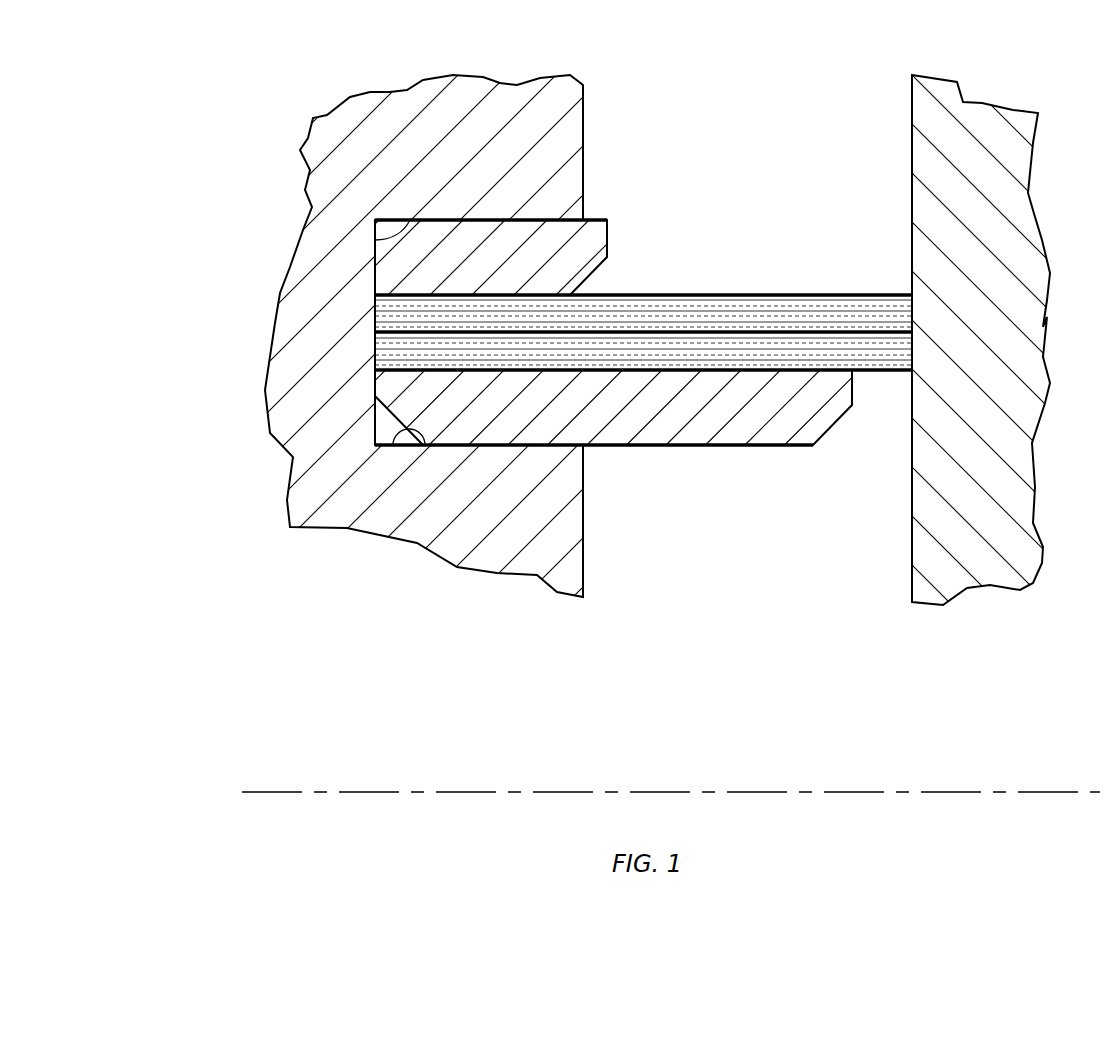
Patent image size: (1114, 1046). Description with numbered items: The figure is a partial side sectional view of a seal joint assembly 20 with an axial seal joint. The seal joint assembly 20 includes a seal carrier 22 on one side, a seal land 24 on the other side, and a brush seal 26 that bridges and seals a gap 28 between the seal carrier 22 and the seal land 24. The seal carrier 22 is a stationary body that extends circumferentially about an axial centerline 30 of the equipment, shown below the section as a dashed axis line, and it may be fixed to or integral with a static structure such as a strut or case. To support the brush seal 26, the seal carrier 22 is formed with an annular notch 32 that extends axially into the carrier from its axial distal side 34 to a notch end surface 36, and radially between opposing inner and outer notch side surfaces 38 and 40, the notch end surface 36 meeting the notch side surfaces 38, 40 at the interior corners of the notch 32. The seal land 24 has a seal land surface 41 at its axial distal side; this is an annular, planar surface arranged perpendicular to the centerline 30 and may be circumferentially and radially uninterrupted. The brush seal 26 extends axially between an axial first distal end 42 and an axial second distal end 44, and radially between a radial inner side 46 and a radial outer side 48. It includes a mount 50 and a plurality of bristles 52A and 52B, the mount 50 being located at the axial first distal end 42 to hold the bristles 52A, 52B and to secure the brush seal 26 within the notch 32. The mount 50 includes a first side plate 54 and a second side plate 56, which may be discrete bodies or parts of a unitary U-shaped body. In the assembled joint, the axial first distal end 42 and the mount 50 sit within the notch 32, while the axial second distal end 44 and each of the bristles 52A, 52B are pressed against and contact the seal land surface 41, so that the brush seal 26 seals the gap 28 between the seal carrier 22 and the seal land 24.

The seal joint assembly 20 is at (197, 107).
The seal carrier 22 is at (332, 118).
The seal land 24 is at (982, 100).
The brush seal 26 is at (688, 462).
The gap 28 is at (755, 158).
The axial centerline 30 is at (1075, 790).
The annular notch 32 is at (382, 440).
The axial distal side 34 is at (585, 140).
The notch end surface 36 is at (388, 238).
The notch side surface 38 is at (421, 448).
The notch side surface 40 is at (408, 220).
The seal land surface 41 is at (912, 233).
The axial first distal end 42 is at (375, 358).
The axial second distal end 44 is at (912, 355).
The radial inner side 46 is at (620, 448).
The radial outer side 48 is at (593, 220).
The mount 50 is at (445, 216).
The bristles 52A is at (790, 308).
The bristles 52B is at (832, 367).
The first side plate 54 is at (729, 450).
The second side plate 56 is at (613, 240).